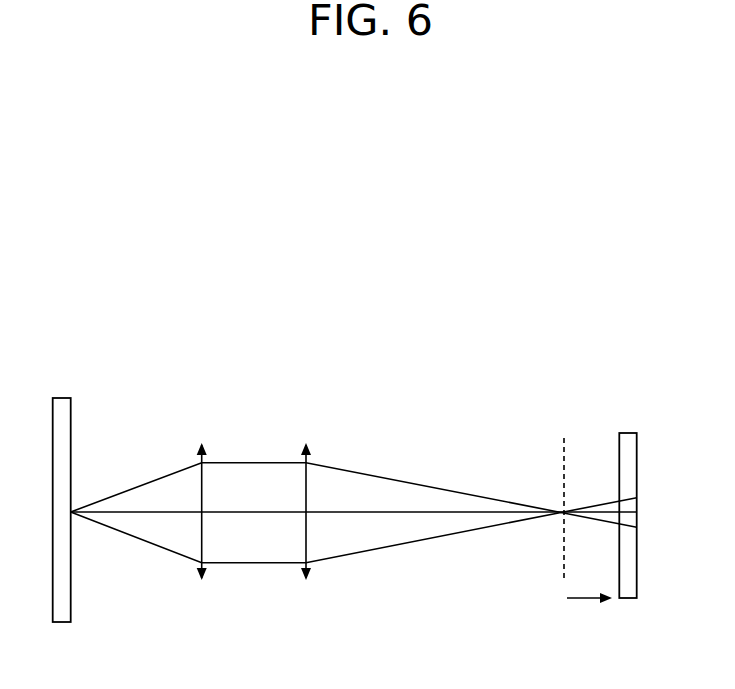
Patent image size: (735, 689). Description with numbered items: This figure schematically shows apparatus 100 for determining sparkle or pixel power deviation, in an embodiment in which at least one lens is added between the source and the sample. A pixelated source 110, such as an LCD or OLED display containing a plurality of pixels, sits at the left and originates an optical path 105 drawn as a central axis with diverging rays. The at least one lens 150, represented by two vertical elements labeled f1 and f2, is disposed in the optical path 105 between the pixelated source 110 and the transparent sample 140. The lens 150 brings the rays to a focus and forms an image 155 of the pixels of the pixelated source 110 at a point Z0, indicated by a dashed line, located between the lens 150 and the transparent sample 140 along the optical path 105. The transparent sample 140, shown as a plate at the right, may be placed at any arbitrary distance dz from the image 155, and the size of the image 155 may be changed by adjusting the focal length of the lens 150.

The apparatus 100 is at (400, 252).
The optical path 105 is at (352, 515).
The pixelated source 110 is at (68, 482).
The transparent sample 140 is at (642, 477).
The at least one lens 150 is at (305, 587).
The image of the pixels 155 is at (550, 477).